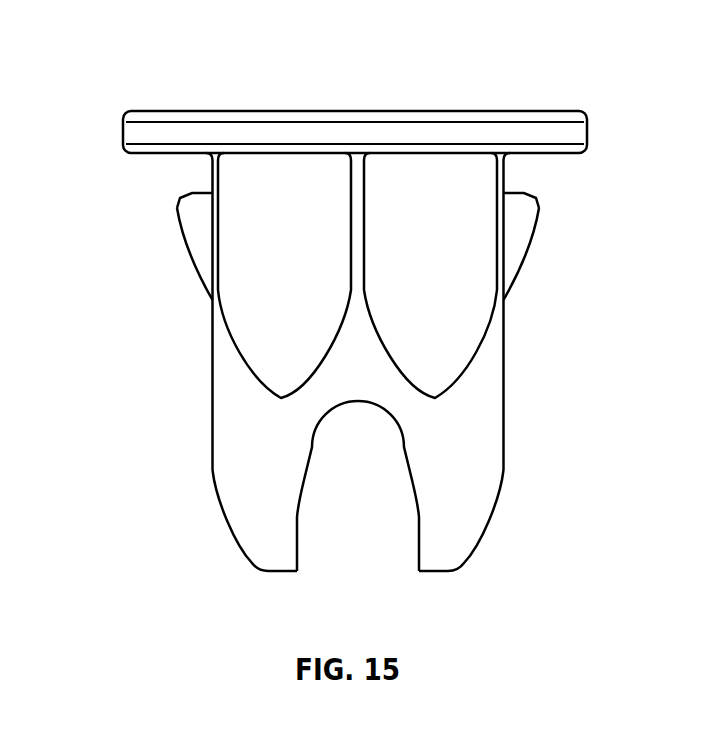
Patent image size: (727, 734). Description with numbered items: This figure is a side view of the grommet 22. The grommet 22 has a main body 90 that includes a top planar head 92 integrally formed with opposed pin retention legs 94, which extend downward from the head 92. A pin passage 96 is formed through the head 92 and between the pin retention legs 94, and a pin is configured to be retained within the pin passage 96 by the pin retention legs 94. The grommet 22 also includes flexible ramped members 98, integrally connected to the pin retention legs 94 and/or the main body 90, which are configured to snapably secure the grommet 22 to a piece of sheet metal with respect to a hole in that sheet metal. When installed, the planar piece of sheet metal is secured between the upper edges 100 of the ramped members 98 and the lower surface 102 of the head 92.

The grommet 22 is at (137, 66).
The main body 90 is at (504, 340).
The top planar head 92 is at (540, 111).
The pin retention legs 94 is at (212, 435).
The pin passage 96 is at (366, 520).
The flexible ramped members 98 is at (189, 243).
The upper edges 100 is at (180, 198).
The lower surface 102 is at (151, 155).